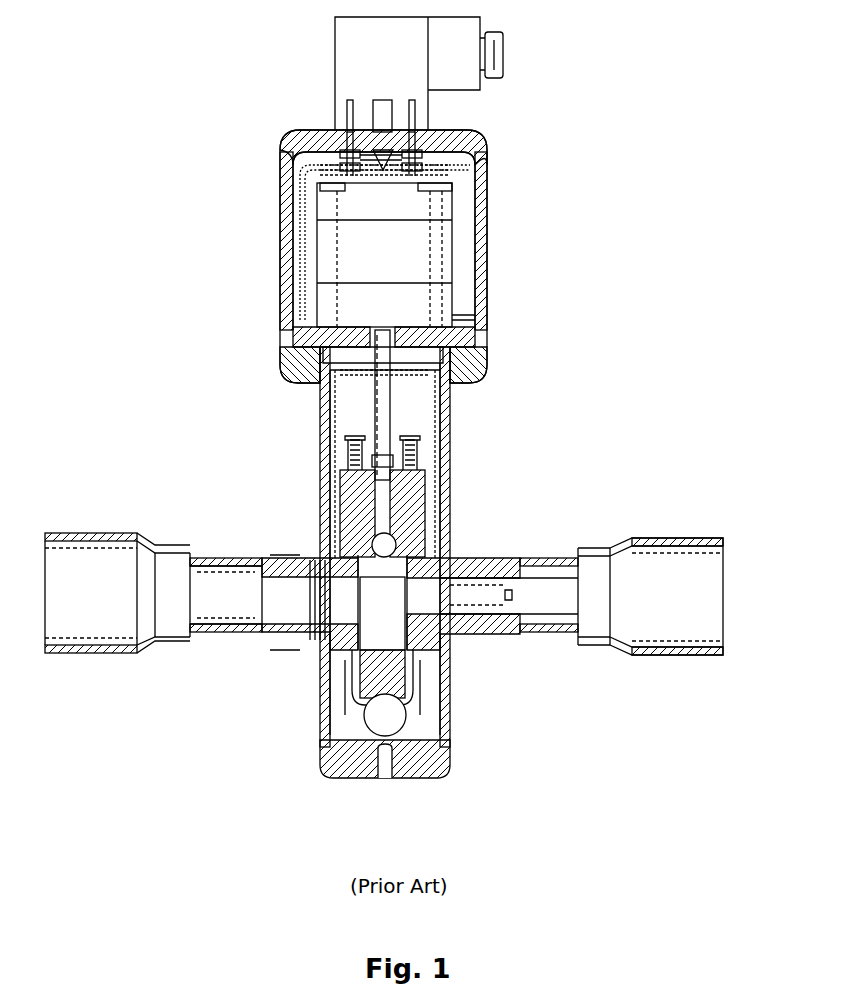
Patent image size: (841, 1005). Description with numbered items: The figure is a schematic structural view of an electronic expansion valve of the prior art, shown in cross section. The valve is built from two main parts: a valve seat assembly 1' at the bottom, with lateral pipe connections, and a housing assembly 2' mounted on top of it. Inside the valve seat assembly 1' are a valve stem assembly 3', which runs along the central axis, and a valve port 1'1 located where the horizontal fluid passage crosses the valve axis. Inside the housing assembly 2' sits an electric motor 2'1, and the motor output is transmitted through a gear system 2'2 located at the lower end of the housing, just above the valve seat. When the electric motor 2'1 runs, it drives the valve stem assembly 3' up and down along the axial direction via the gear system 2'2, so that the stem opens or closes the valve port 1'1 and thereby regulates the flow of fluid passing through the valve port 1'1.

The valve seat assembly 1' is at (305, 562).
The valve port 1'1 is at (297, 645).
The housing assembly 2' is at (322, 230).
The electric motor 2'1 is at (311, 255).
The gear system 2'2 is at (318, 355).
The valve stem assembly 3' is at (292, 443).